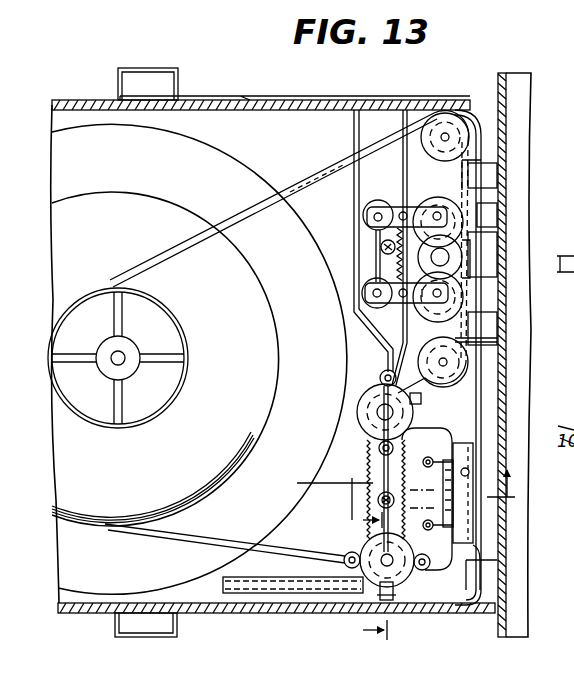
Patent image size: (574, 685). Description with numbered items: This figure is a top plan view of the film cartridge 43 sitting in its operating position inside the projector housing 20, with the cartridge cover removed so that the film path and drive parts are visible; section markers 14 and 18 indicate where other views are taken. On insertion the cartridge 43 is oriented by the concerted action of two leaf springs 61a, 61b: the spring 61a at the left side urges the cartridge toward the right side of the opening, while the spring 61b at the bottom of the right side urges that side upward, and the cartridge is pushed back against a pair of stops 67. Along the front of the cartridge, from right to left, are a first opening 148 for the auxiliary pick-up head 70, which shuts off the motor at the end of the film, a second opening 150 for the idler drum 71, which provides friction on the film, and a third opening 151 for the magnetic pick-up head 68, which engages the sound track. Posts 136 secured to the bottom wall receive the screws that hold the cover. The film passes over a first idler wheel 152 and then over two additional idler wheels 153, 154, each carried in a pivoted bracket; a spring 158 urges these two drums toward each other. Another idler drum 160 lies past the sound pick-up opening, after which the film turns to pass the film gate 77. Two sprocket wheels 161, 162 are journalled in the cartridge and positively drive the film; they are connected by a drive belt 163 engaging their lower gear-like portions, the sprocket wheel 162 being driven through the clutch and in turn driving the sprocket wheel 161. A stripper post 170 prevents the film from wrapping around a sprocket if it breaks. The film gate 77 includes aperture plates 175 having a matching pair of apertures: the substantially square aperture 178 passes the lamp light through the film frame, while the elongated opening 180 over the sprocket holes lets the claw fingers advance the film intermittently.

The housing 20 is at (192, 97).
The leaf spring 61a is at (270, 95).
The leaf spring 61b is at (247, 583).
The film cartridge 43 is at (462, 104).
The first opening 148 is at (486, 163).
The auxiliary pick-up head 70 is at (488, 178).
The stops 67 is at (490, 557).
The second opening 150 is at (478, 250).
The first idler wheel 152 is at (423, 150).
The idler wheel 153 is at (428, 204).
The posts 136 is at (382, 495).
The spring 158 is at (392, 266).
The idler drum 71 is at (468, 262).
The idler wheel 154 is at (400, 314).
The idler drum 160 is at (419, 357).
The magnetic pick-up head 68 is at (489, 330).
The sprocket wheel 161 is at (360, 394).
The third opening 151 is at (471, 339).
The stripper post 170 is at (391, 606).
The drive belt 163 is at (420, 448).
The film gate 77 is at (442, 482).
The sprocket wheel 162 is at (348, 554).
The aperture 178 is at (467, 471).
The aperture plates 175 is at (454, 498).
The elongated opening 180 is at (454, 512).
The section line 14- 14 is at (406, 475).
The section line 18- 18 is at (356, 581).